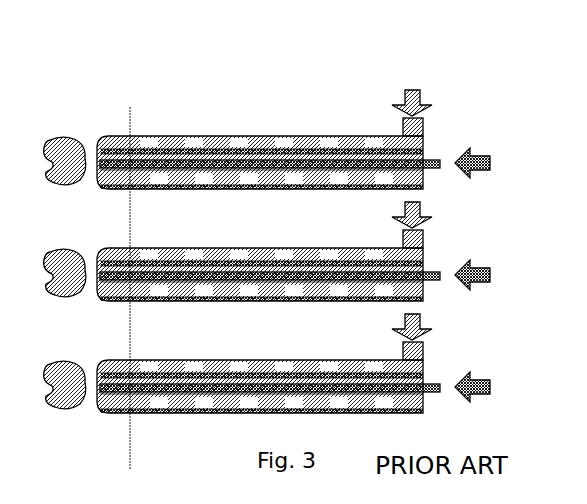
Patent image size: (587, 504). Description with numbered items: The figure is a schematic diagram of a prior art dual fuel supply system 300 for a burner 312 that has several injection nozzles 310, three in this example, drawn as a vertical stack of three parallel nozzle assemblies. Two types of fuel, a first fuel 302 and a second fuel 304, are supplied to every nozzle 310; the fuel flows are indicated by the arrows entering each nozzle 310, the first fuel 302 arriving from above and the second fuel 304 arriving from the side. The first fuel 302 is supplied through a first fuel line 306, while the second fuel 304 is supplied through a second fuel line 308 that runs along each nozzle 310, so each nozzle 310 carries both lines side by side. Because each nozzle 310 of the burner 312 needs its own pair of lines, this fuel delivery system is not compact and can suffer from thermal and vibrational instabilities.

The dual fuel supply system 300 is at (265, 91).
The first fuel 302 is at (410, 201).
The second fuel 304 is at (499, 275).
The first fuel line 306 is at (275, 136).
The second fuel line 308 is at (305, 165).
The injection nozzle 310 is at (99, 152).
The burner 312 is at (130, 107).